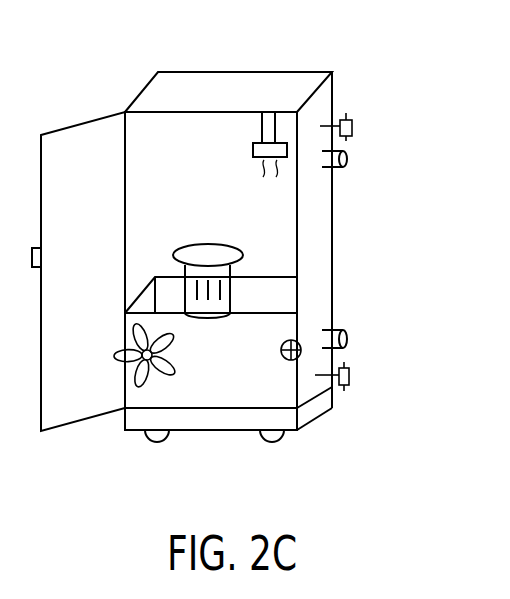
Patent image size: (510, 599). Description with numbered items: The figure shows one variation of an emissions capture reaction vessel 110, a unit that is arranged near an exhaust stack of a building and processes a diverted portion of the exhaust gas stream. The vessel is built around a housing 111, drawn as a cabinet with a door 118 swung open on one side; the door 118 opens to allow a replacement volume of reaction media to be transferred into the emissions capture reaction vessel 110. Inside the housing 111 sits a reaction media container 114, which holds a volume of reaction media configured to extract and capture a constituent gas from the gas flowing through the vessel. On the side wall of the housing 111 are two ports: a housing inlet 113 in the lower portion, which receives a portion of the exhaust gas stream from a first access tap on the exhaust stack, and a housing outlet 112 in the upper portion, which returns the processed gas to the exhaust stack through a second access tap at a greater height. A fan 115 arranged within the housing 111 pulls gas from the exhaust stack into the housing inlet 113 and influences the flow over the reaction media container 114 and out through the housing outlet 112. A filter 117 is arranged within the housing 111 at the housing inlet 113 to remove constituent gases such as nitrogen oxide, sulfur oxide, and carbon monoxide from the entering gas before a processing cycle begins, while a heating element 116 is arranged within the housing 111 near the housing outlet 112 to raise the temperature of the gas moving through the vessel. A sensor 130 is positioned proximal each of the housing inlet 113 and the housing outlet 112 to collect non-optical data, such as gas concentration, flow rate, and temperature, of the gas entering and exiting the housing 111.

The emissions capture reaction vessel 110 is at (317, 72).
The housing 111 is at (146, 140).
The housing outlet 112 is at (348, 153).
The housing inlet 113 is at (347, 340).
The reaction media container 114 is at (263, 302).
The fan 115 is at (150, 365).
The heating element 116 is at (262, 142).
The filter 117 is at (298, 365).
The door 118 is at (67, 137).
The sensor 130 is at (347, 118).